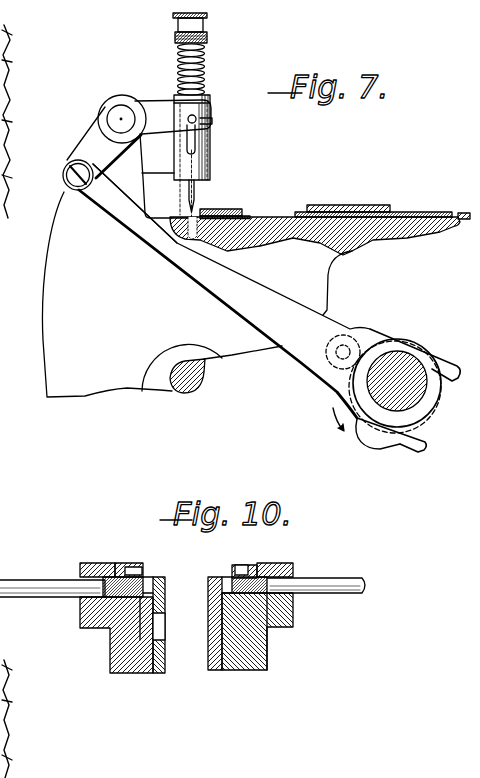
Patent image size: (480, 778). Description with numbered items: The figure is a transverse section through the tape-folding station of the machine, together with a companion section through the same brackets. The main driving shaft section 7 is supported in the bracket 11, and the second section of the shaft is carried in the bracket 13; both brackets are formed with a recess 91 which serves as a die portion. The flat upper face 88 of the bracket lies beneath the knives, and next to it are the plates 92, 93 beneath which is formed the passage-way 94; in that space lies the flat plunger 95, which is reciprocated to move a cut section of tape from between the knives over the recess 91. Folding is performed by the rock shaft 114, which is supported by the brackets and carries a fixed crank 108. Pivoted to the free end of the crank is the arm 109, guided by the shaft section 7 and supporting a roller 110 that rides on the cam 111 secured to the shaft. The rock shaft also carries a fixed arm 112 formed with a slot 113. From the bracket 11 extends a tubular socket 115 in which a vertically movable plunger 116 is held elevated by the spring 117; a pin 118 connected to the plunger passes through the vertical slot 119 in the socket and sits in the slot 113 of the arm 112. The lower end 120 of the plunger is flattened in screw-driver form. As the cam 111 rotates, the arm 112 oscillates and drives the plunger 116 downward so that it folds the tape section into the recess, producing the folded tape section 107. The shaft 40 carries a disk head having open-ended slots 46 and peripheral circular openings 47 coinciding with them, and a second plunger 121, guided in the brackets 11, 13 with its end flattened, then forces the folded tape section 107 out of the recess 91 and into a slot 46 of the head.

In FIG. 7, the shaft section 7 is at (425, 394).
In FIG. 7, the bracket 11 is at (331, 278).
In FIG. 10, the bracket 11 is at (266, 656).
In FIG. 10, the bracket 13 is at (110, 667).
In FIG. 7, the shaft 40 is at (197, 393).
In FIG. 10, the open-ended slot 46 is at (223, 577).
In FIG. 10, the peripheral circular opening 47 is at (210, 592).
In FIG. 7, the upper face 88 is at (273, 217).
In FIG. 7, the recess 91 is at (182, 217).
In FIG. 10, the recess 91 is at (110, 611).
In FIG. 7, the plate 92 is at (227, 208).
In FIG. 7, the plate 93 is at (330, 206).
In FIG. 10, the plate 93 is at (102, 563).
In FIG. 7, the passage-way 94 is at (250, 213).
In FIG. 10, the passage-way 94 is at (128, 563).
In FIG. 7, the flat plunger 95 is at (455, 213).
In FIG. 7, the folded tape section 107 is at (177, 243).
In FIG. 10, the folded tape section 107 is at (143, 577).
In FIG. 7, the crank 108 is at (86, 135).
In FIG. 7, the arm 109 is at (232, 307).
In FIG. 7, the roller 110 is at (350, 336).
In FIG. 7, the cam 111 is at (380, 449).
In FIG. 7, the arm 112 is at (153, 102).
In FIG. 7, the slot 113 is at (212, 116).
In FIG. 7, the rock shaft 114 is at (121, 117).
In FIG. 7, the tubular socket 115 is at (209, 98).
In FIG. 7, the plunger 116 is at (205, 72).
In FIG. 7, the spring 117 is at (205, 58).
In FIG. 7, the pin 118 is at (197, 120).
In FIG. 7, the vertical slot 119 is at (196, 145).
In FIG. 7, the lower end 120 is at (195, 196).
In FIG. 10, the plunger 121 is at (26, 582).